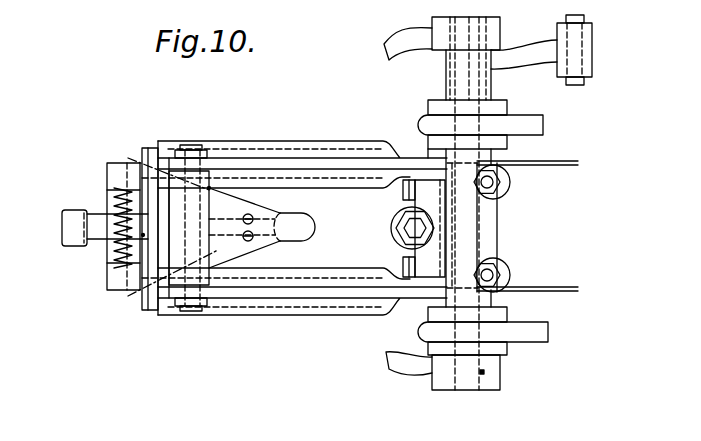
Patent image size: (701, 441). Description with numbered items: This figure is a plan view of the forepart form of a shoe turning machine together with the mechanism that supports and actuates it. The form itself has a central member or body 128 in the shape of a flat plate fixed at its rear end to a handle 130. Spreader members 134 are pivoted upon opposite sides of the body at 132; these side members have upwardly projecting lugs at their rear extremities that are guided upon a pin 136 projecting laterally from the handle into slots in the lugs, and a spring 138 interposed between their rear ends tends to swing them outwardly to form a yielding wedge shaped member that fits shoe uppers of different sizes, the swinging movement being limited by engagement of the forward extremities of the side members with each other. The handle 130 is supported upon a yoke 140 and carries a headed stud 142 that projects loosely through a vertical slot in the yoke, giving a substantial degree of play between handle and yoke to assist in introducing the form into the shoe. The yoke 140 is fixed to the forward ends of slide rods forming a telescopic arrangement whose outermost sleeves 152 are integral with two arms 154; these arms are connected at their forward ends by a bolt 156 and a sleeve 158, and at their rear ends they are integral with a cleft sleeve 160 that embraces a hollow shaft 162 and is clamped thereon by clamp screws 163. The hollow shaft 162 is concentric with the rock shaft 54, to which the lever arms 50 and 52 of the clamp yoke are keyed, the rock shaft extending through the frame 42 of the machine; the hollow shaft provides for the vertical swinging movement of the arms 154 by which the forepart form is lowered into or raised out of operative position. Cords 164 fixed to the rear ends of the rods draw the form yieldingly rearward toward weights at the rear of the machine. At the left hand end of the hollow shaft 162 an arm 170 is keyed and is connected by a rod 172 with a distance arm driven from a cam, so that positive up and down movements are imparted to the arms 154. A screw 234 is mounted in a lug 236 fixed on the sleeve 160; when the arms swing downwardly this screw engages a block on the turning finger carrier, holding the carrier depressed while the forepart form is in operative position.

The frame 42 is at (536, 124).
The lever arm 50 is at (407, 368).
The lever arm 52 is at (413, 42).
The rock shaft 54 is at (486, 372).
The central member or body 128 is at (305, 226).
The handle 130 is at (68, 210).
The pivot 132 is at (250, 219).
The spreader members 134 is at (232, 258).
The pin 136 is at (113, 253).
The spring 138 is at (113, 258).
The yoke 140 is at (150, 148).
The headed stud 142 is at (143, 235).
The sleeves 152 is at (280, 142).
The arms 154 is at (315, 160).
The bolt 156 is at (187, 148).
The sleeve 158 is at (209, 188).
The cleft sleeve 160 is at (498, 207).
The hollow shaft 162 is at (480, 240).
The clamp screws 163 is at (508, 273).
The cords 164 is at (547, 163).
The arm 170 is at (523, 52).
The rod 172 is at (588, 52).
The screw 234 is at (413, 228).
The lug 236 is at (420, 258).